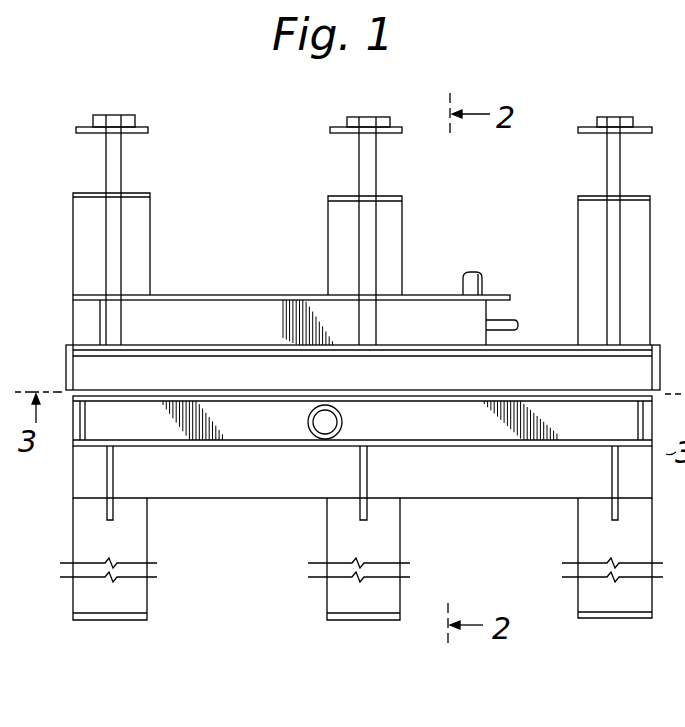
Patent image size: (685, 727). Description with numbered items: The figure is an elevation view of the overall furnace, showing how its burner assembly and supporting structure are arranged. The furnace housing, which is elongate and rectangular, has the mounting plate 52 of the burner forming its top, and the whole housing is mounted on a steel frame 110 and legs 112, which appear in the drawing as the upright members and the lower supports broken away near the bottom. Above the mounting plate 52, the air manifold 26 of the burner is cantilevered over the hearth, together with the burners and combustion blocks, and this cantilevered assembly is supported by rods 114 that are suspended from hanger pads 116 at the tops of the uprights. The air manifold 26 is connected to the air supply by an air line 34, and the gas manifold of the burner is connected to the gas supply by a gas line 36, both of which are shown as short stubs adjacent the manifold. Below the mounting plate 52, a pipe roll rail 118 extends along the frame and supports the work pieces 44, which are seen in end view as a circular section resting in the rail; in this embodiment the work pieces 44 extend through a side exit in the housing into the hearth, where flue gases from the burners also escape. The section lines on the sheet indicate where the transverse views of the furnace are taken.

The air manifold 26 is at (419, 317).
The air line 34 is at (478, 277).
The gas line 36 is at (513, 320).
The work pieces 44 is at (343, 422).
The mounting plate 52 is at (240, 345).
The steel frame 110 is at (148, 131).
The legs 112 is at (137, 598).
The rods 114 is at (369, 173).
The hanger pads 116 is at (350, 121).
The pipe roll rail 118 is at (193, 447).